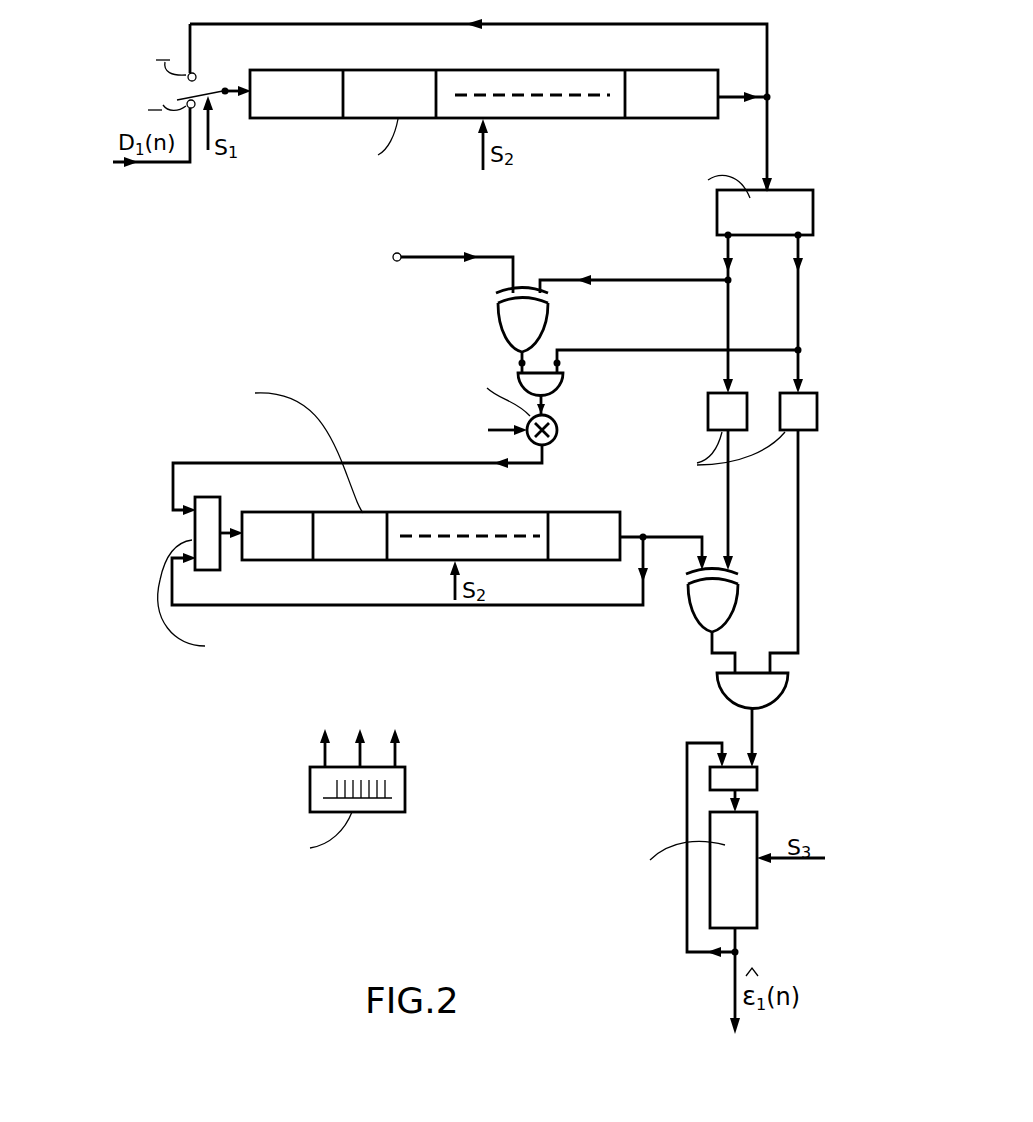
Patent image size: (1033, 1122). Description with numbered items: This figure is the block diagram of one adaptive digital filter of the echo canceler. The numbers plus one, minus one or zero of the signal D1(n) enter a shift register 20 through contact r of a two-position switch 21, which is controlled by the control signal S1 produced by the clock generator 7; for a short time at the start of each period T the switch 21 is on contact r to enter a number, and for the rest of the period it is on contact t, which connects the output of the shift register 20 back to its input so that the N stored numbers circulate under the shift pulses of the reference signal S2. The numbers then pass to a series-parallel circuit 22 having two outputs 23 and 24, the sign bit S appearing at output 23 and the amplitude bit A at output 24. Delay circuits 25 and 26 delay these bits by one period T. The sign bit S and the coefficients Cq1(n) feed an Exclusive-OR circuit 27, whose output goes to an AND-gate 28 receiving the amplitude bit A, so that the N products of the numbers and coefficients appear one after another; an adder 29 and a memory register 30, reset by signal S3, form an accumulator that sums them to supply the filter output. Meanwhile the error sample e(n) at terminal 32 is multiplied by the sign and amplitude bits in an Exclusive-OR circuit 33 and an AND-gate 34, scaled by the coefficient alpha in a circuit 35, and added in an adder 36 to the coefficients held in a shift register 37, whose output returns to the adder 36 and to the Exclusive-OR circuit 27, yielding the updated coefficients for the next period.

The clock generator 7 is at (405, 790).
The shift register 20 is at (513, 70).
The two-position switch 21 is at (207, 90).
The series-parallel circuit 22 is at (784, 200).
The output 23 is at (716, 243).
The output 24 is at (800, 243).
The delay circuit 25 is at (708, 416).
The delay circuit 26 is at (817, 412).
The Exclusive-OR circuit 27 is at (701, 618).
The AND-gate 28 is at (774, 685).
The adder 29 is at (757, 782).
The memory register 30 is at (752, 833).
The terminal 32 is at (391, 266).
The Exclusive-OR circuit 33 is at (510, 326).
The AND-gate 34 is at (556, 392).
The circuit 35 is at (553, 434).
The adder 36 is at (222, 513).
The shift register 37 is at (478, 515).